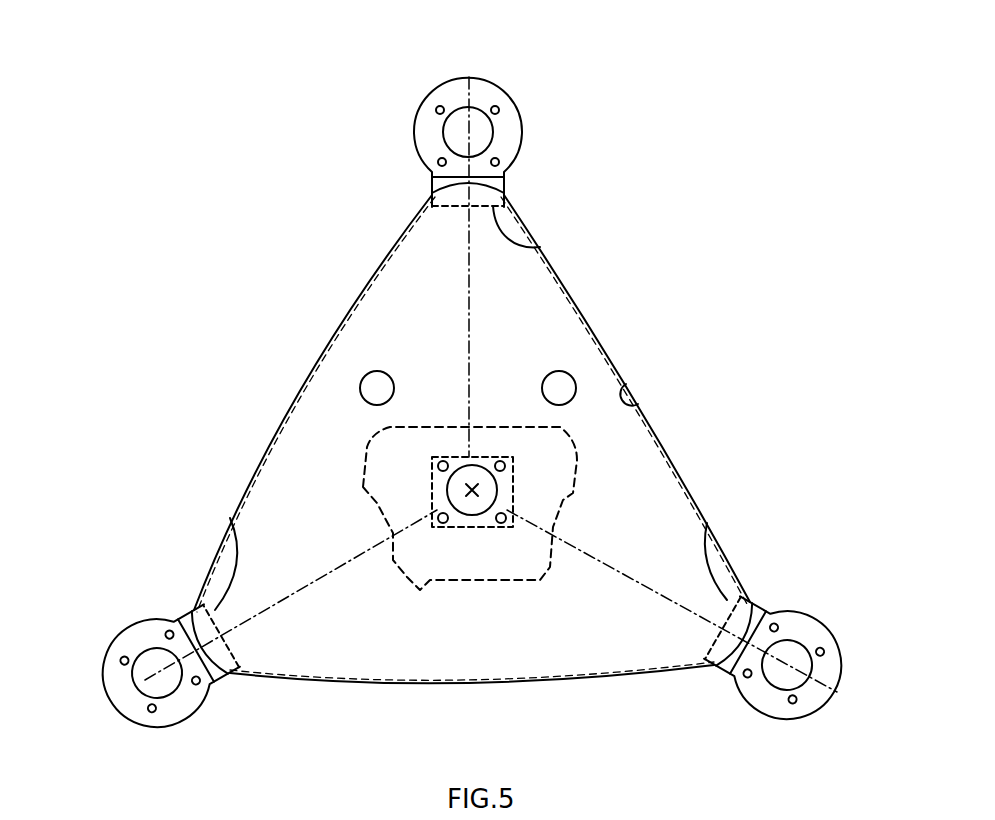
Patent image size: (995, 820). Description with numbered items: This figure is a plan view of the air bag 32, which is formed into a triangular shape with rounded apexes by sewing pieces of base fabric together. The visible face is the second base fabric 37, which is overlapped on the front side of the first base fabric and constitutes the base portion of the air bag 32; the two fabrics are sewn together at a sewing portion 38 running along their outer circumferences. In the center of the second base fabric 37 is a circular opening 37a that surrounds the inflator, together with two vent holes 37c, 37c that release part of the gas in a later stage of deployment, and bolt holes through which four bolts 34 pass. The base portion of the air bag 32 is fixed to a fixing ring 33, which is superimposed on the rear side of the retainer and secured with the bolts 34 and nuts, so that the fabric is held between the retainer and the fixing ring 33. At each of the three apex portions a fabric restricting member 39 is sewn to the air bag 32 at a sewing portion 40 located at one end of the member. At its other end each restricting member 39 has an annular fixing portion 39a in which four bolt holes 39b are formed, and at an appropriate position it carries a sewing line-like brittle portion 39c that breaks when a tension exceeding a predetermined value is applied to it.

The air bag 32 is at (303, 305).
The fixing ring 33 is at (470, 490).
The bolts 34 is at (450, 457).
The second base fabric 37 is at (283, 402).
The circular opening 37a is at (513, 507).
The vent holes 37c is at (386, 374).
The sewing portion 38 is at (637, 400).
The fabric restricting member 39 is at (503, 95).
The annular fixing portion 39a is at (457, 98).
The bolt holes 39b is at (440, 160).
The brittle portion 39c is at (496, 180).
The sewing portion 40 is at (540, 247).